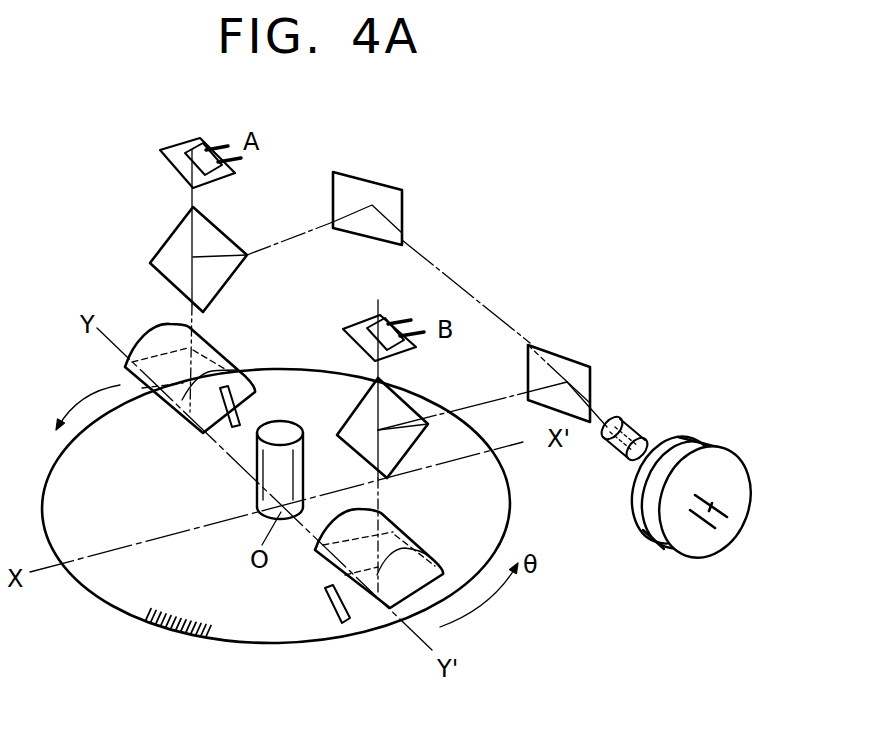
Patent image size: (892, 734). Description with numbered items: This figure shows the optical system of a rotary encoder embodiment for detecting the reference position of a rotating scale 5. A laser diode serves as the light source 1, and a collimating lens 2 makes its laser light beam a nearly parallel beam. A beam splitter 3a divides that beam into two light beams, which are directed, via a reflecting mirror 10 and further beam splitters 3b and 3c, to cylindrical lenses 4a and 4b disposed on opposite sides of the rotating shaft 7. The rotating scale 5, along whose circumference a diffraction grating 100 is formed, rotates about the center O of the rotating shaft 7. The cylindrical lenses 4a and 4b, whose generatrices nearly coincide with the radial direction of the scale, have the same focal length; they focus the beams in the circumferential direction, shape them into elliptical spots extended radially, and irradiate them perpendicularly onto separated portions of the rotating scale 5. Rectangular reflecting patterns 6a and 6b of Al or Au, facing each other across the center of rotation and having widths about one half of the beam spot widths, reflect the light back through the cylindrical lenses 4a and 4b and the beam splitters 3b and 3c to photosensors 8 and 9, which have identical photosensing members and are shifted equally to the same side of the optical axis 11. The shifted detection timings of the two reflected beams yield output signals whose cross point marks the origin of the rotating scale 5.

The light source 1 is at (678, 557).
The collimating lens 2 is at (632, 426).
The beam splitter 3a is at (567, 353).
The beam splitter 3b is at (160, 245).
The beam splitter 3c is at (412, 443).
The cylindrical lens 4a is at (210, 347).
The cylindrical lens 4b is at (383, 517).
The rotating scale 5 is at (95, 595).
The pattern 6a is at (237, 418).
The pattern 6b is at (327, 607).
The rotating shaft 7 is at (257, 493).
The photosensor 8 is at (173, 163).
The photosensor 9 is at (382, 323).
The reflecting mirror 10 is at (403, 208).
The optical axis 11 is at (193, 198).
The diffraction grating 100 is at (175, 633).